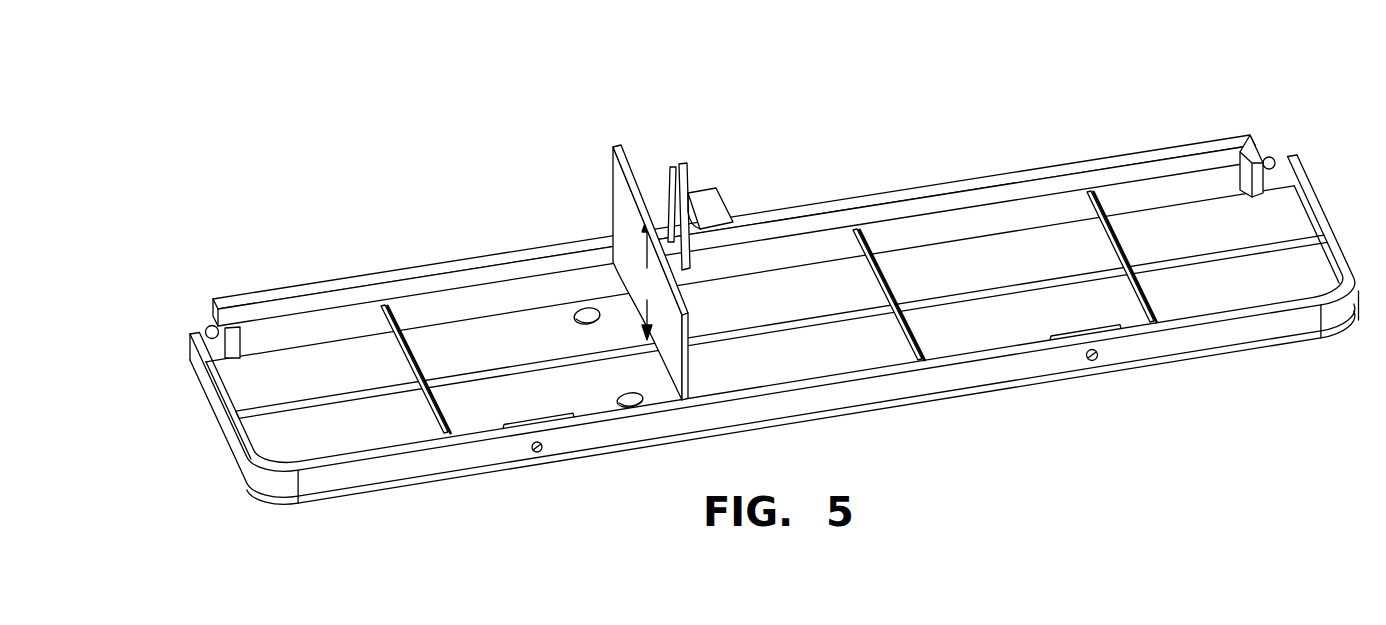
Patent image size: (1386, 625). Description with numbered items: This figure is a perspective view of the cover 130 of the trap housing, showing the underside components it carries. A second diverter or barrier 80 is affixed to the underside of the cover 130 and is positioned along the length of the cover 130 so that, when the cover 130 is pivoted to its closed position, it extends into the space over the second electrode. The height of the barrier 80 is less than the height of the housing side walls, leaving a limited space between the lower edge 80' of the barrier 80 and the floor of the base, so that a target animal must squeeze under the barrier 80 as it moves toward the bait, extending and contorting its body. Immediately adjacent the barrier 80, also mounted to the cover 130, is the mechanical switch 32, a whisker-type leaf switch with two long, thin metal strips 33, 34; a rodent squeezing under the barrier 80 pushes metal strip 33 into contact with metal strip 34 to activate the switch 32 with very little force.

The cover 130 is at (556, 492).
The barrier 80 is at (616, 249).
The lower edge of the barrier 80' is at (650, 185).
The metal strip 34 is at (668, 165).
The mechanical switch 32 is at (687, 158).
The metal strip 33 is at (690, 178).